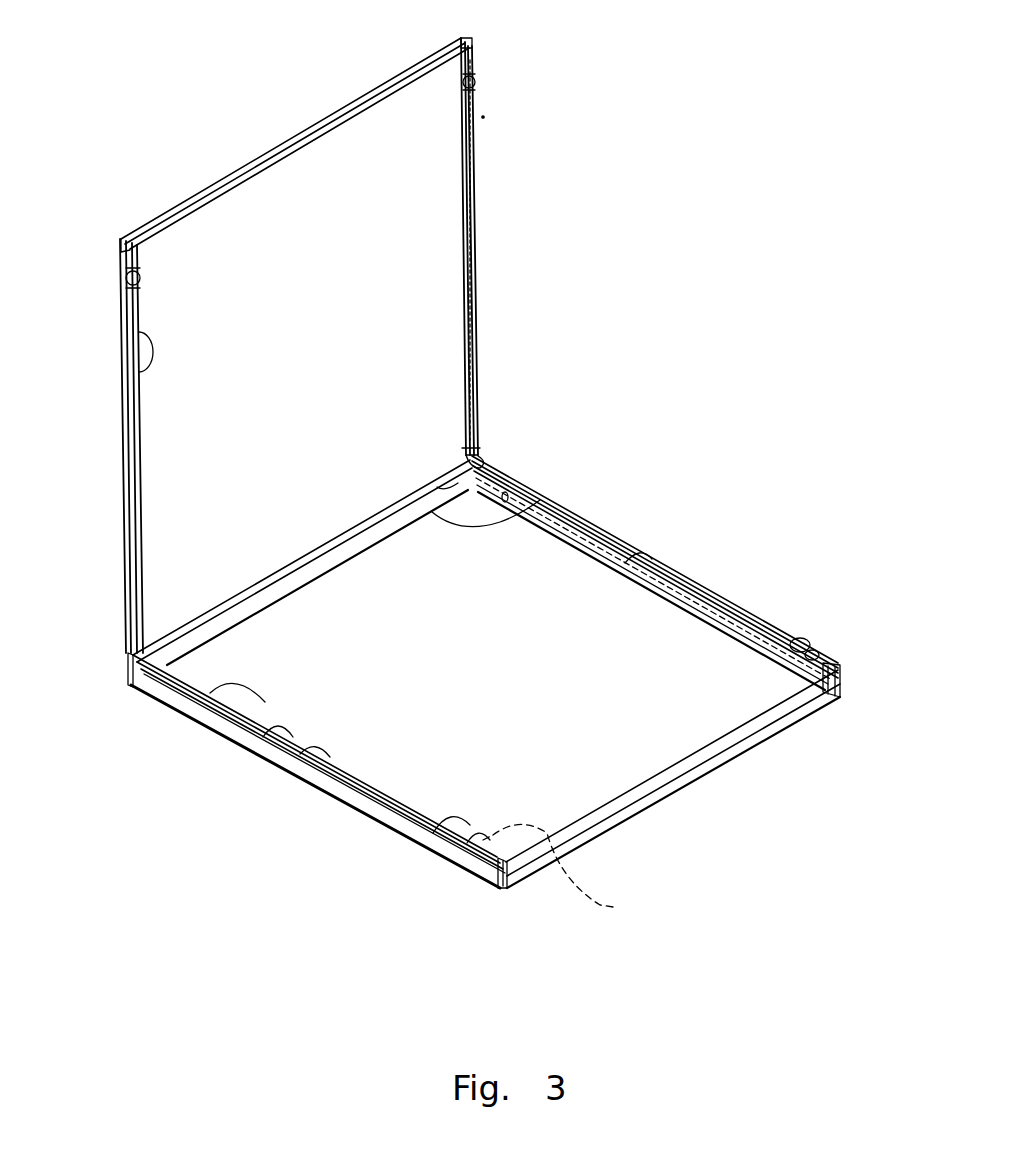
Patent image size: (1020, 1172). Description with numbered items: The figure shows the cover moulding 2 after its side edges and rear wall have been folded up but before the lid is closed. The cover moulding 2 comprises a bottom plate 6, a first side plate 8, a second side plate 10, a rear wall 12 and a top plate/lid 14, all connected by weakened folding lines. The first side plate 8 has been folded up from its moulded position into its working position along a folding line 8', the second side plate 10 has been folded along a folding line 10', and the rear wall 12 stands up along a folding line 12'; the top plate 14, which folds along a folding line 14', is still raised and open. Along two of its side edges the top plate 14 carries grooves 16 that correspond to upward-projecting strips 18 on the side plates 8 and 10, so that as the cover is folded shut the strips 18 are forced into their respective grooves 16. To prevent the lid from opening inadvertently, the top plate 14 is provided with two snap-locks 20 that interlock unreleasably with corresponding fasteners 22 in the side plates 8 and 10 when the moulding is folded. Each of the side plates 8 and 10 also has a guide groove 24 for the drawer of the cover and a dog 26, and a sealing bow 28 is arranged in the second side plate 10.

The cover moulding 2 is at (707, 535).
The bottom plate 6 is at (140, 365).
The first side plate 8 is at (318, 771).
The folding line 8' is at (606, 813).
The second side plate 10 is at (655, 573).
The folding line 10' is at (868, 709).
The rear wall 12 is at (513, 457).
The folding line 12' is at (608, 473).
The top plate/lid 14 is at (357, 345).
The folding line 14' is at (505, 417).
The grooves 16 is at (474, 137).
The upward-projecting strips 18 is at (627, 552).
The snap-locks 20 is at (473, 78).
The fasteners 22 is at (790, 637).
The guide groove 24 is at (778, 668).
The dog 26 is at (835, 655).
The sealing bow 28 is at (505, 492).